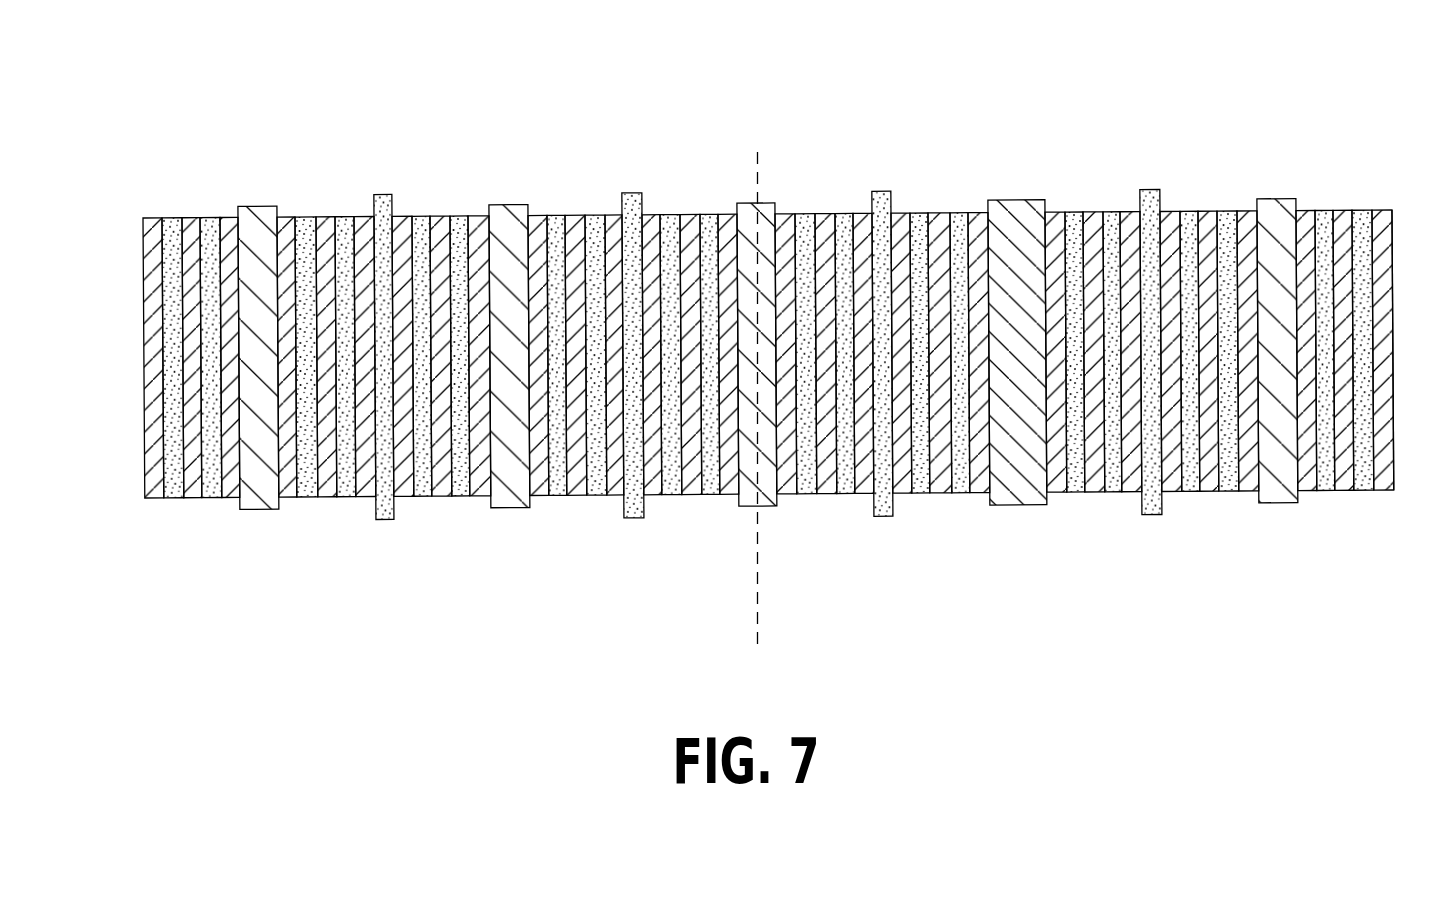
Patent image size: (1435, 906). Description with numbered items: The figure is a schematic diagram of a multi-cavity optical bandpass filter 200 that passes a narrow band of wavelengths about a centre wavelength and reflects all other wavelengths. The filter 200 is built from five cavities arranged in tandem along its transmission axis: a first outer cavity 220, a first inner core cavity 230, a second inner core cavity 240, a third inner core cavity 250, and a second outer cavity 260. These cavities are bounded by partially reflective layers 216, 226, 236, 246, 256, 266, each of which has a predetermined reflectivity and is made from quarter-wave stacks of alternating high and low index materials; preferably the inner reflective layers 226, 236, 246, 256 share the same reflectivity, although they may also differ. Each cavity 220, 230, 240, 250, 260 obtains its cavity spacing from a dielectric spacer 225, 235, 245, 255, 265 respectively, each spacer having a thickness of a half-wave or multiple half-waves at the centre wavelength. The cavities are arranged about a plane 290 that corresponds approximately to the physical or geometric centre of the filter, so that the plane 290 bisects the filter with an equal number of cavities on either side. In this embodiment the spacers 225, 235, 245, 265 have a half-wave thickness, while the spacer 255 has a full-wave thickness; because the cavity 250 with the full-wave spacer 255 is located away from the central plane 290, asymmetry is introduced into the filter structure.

The filter 200 is at (92, 188).
The first outer cavity 220 is at (147, 156).
The first inner core cavity 230 is at (617, 156).
The second inner core cavity 240 is at (867, 156).
The third inner core cavity 250 is at (900, 156).
The second outer cavity 260 is at (1152, 156).
The partially reflective layer 216 is at (140, 542).
The partially reflective layer 226 is at (283, 540).
The partially reflective layer 236 is at (745, 540).
The partially reflective layer 246 is at (788, 537).
The partially reflective layer 256 is at (1050, 537).
The partially reflective layer 266 is at (1308, 535).
The dielectric spacer 225 is at (262, 510).
The dielectric spacer 235 is at (510, 508).
The dielectric spacer 245 is at (750, 508).
The dielectric spacer 255 is at (1020, 507).
The dielectric spacer 265 is at (1278, 505).
The plane 290 is at (758, 624).